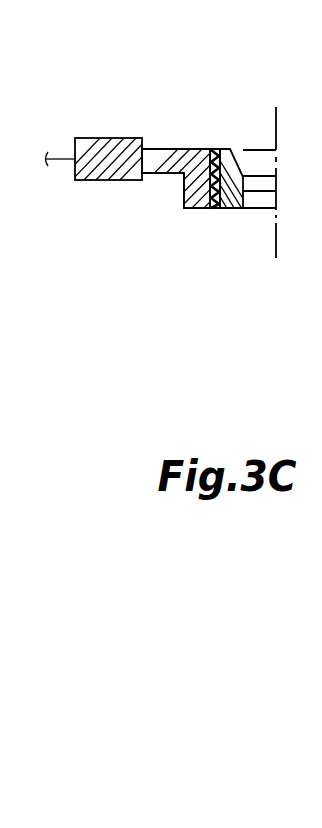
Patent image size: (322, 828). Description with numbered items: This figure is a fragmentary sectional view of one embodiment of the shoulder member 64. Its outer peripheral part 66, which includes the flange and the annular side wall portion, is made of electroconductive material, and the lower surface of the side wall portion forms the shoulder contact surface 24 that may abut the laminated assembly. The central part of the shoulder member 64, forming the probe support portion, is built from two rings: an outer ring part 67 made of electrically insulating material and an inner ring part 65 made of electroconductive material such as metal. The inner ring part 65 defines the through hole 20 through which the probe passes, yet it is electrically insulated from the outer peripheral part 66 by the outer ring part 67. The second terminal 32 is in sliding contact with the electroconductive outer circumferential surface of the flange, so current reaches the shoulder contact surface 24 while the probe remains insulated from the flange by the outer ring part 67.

The shoulder member 64 is at (119, 96).
The second terminal 32 is at (107, 180).
The outer peripheral part 66 is at (173, 150).
The shoulder contact surface 24 is at (193, 210).
The outer ring part 67 is at (215, 150).
The inner ring part 65 is at (230, 178).
The through hole 20 is at (258, 180).